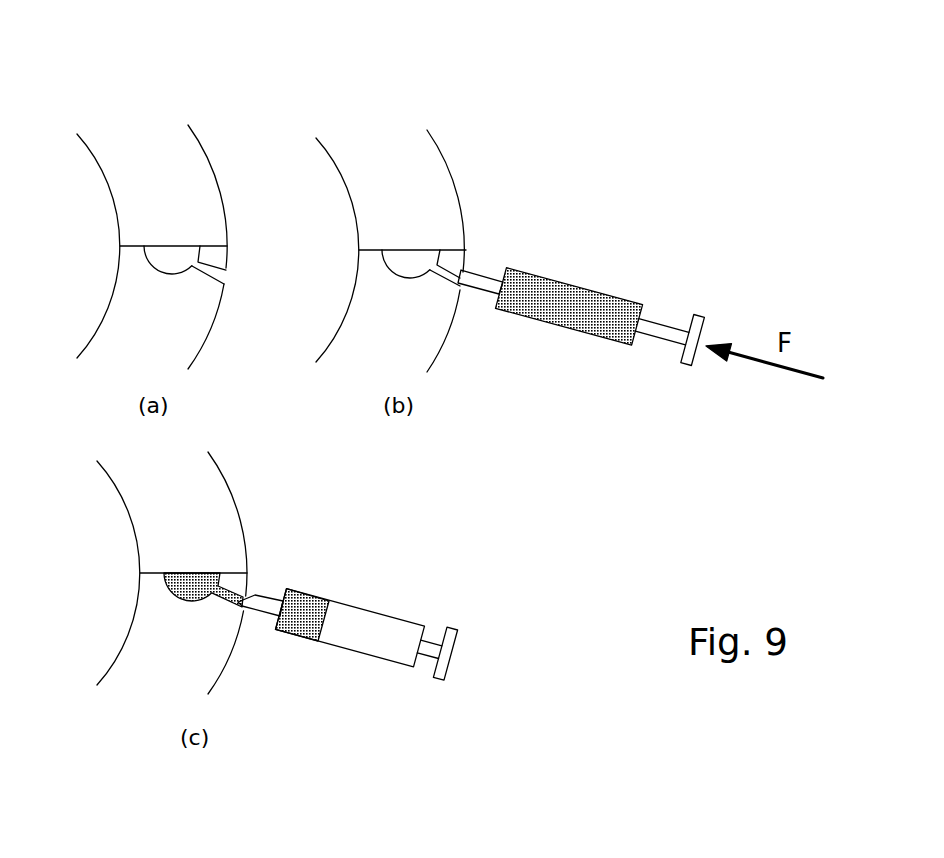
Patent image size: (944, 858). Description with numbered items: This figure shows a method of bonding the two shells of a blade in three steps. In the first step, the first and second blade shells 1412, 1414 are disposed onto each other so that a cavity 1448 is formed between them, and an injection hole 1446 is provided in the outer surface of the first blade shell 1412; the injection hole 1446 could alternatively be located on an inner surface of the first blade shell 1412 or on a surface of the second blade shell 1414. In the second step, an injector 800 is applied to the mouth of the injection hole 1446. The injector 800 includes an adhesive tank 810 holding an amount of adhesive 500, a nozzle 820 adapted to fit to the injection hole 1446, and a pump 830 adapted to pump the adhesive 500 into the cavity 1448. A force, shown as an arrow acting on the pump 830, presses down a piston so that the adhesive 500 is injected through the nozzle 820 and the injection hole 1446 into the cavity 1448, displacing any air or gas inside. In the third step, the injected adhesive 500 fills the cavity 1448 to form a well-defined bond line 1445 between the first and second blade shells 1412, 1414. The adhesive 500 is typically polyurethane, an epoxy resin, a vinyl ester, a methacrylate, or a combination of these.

The first blade shell 1412 is at (107, 310).
The second blade shell 1414 is at (197, 140).
The cavity 1448 is at (172, 264).
The injection hole 1446 is at (226, 281).
The bond line 1445 is at (197, 573).
The injector 800 is at (624, 316).
The adhesive tank 810 is at (620, 298).
The nozzle 820 is at (482, 275).
The pump 830 is at (703, 317).
The adhesive 500 is at (560, 307).